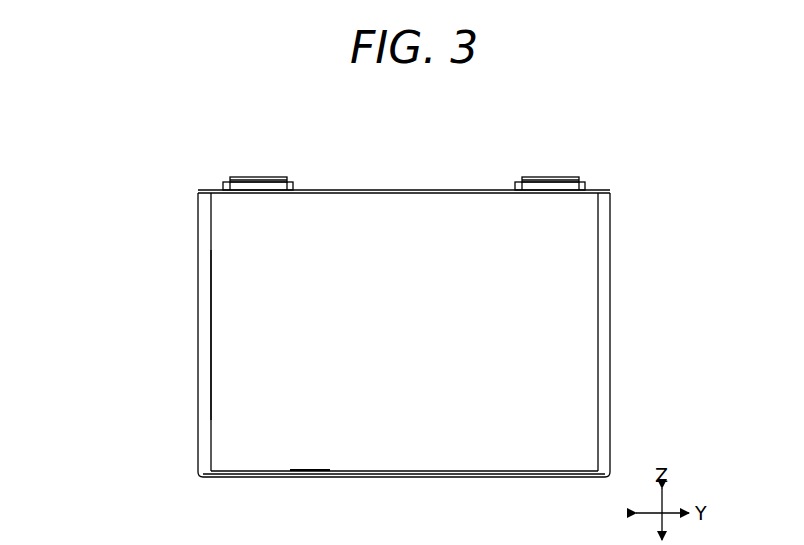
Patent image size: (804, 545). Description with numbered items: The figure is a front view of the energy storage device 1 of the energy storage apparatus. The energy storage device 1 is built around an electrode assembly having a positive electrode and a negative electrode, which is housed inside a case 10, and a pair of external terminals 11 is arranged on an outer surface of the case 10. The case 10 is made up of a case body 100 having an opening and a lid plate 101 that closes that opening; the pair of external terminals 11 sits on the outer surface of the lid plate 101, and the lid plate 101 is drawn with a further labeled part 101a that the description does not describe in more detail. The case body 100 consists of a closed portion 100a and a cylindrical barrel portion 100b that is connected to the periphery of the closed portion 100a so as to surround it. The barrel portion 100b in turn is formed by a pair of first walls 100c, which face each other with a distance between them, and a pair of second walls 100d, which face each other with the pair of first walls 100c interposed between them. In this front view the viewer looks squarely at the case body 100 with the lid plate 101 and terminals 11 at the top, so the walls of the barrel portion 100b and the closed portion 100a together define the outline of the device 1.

The energy storage device 1 is at (153, 187).
The case 10 is at (719, 152).
The external terminals 11 is at (257, 177).
The case body 100 is at (613, 257).
The closed portion 100a is at (302, 478).
The barrel portion 100b is at (90, 305).
The first walls 100c is at (237, 348).
The second walls 100d is at (198, 307).
The lid plate 101 is at (601, 186).
The lid outer surface 101a is at (405, 190).